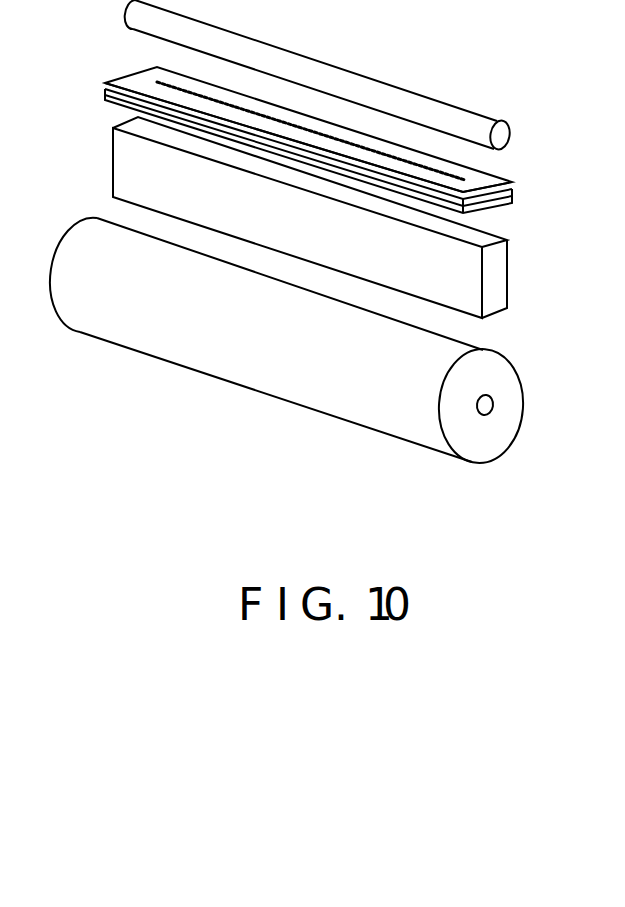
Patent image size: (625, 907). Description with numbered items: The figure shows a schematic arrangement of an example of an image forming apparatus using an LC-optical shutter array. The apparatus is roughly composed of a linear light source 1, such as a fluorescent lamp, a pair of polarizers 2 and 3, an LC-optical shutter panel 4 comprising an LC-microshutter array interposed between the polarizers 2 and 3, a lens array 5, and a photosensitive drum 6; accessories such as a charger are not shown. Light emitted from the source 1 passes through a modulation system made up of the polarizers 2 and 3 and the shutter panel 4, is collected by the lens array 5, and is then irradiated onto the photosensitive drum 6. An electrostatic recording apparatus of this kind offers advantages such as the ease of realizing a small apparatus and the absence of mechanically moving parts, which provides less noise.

The linear light source 1 is at (509, 131).
The polarizer 2 is at (508, 180).
The polarizer 3 is at (503, 203).
The LC-optical shutter panel 4 is at (514, 189).
The lens array 5 is at (508, 281).
The photosensitive drum 6 is at (524, 401).